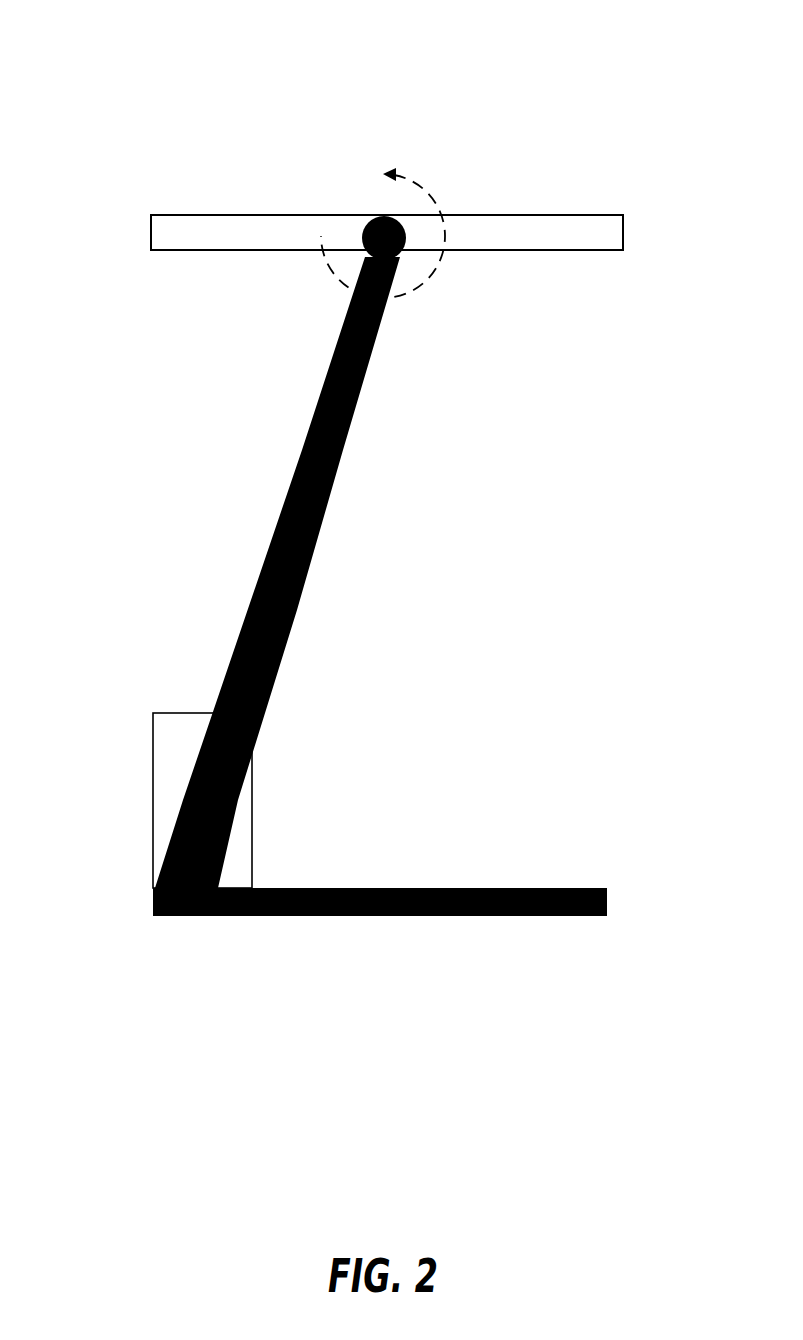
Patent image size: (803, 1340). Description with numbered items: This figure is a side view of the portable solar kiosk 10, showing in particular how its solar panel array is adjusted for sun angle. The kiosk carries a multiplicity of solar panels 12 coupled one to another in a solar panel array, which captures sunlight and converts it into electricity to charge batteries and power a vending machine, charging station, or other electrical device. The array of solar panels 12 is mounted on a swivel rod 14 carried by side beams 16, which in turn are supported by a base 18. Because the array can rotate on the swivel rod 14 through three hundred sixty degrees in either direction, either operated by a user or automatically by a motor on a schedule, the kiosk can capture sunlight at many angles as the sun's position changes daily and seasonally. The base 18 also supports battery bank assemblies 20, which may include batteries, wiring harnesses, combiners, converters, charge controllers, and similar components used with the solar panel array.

The solar kiosk 10 is at (647, 82).
The solar panels 12 is at (503, 235).
The swivel rod 14 is at (370, 217).
The side beams 16 is at (278, 522).
The base 18 is at (468, 889).
The battery bank assemblies 20 is at (162, 743).